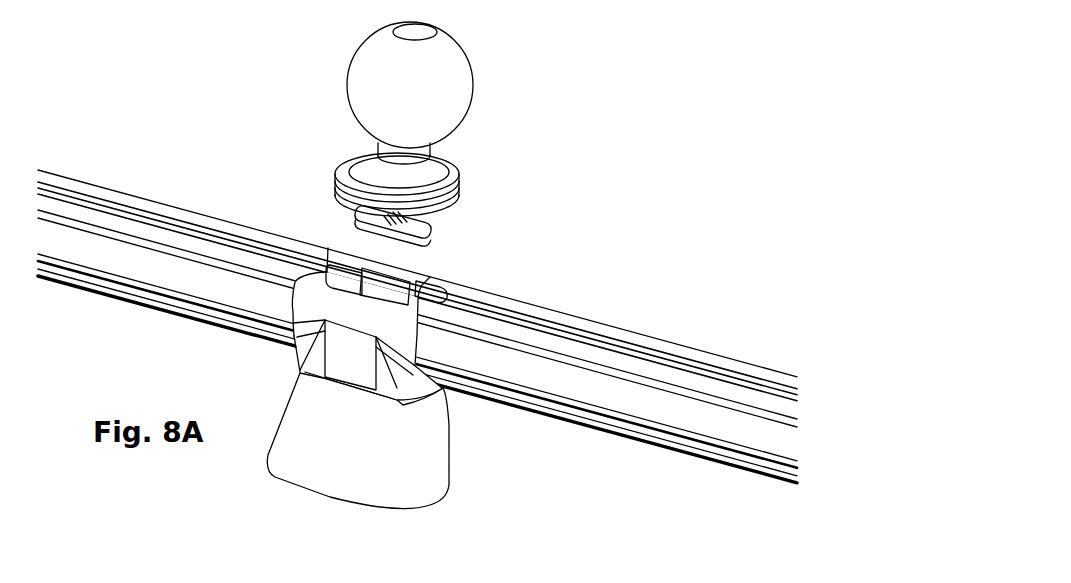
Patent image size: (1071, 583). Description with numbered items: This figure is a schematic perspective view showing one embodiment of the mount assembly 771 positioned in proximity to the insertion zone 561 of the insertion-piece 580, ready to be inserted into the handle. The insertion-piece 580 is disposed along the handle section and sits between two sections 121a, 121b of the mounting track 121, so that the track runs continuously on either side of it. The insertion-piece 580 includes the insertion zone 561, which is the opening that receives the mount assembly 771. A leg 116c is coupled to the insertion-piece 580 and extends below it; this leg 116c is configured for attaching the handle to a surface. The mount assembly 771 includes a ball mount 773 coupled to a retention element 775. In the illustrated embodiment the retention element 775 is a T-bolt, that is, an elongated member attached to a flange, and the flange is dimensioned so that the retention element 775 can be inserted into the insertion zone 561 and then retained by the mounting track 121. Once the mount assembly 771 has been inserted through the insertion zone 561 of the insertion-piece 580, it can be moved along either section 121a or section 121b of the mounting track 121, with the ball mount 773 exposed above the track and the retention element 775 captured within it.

The mounting track 121 is at (417, 313).
The section of the mounting track 121a is at (615, 332).
The section of the mounting track 121b is at (136, 207).
The leg 116c is at (466, 494).
The insertion zone 561 is at (400, 278).
The insertion-piece 580 is at (440, 288).
The mount assembly 771 is at (407, 131).
The ball mount 773 is at (366, 57).
The retention element 775 is at (356, 217).